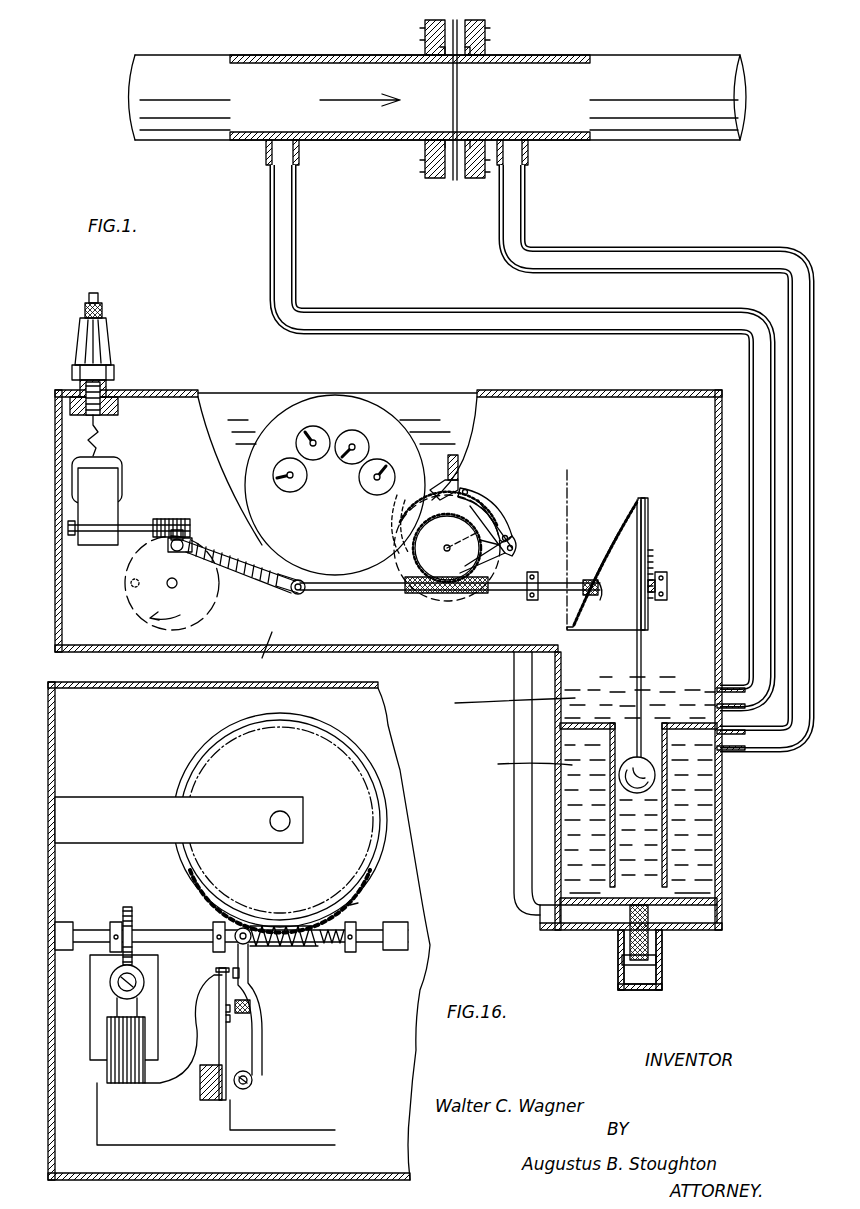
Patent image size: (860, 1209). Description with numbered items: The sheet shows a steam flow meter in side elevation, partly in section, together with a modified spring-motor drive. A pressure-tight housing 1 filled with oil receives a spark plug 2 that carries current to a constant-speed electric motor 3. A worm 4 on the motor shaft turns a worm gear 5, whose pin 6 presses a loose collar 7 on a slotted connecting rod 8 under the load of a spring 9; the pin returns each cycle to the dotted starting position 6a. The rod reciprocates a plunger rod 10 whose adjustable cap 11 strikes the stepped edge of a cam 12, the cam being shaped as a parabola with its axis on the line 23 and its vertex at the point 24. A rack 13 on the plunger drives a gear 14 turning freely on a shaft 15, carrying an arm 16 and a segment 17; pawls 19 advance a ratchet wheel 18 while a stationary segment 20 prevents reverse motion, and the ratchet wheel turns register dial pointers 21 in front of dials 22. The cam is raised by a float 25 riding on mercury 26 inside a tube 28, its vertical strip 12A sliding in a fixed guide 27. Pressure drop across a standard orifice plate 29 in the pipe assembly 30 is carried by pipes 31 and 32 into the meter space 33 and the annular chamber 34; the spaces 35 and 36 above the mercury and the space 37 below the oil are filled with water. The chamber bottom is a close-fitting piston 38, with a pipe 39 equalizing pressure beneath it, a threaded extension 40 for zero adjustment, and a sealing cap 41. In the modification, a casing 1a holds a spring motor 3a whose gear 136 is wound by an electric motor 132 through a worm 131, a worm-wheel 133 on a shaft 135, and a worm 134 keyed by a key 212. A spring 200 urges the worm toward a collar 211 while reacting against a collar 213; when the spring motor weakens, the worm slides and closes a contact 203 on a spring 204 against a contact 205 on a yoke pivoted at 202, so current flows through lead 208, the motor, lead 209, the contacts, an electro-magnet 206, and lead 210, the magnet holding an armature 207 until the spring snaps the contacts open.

In FIG. 1, the pressure-tight housing 1 is at (232, 398).
In FIG. 1, the spark plug 2 is at (108, 332).
In FIG. 1, the constant-speed electric motor 3 is at (100, 482).
In FIG. 1, the worm 4 is at (172, 520).
In FIG. 1, the worm gear 5 is at (125, 607).
In FIG. 1, the pin 6 is at (187, 534).
In FIG. 1, the starting position of pin 6a is at (130, 583).
In FIG. 1, the loose collar 7 is at (180, 552).
In FIG. 1, the connecting rod 8 is at (249, 572).
In FIG. 1, the spring 9 is at (240, 562).
In FIG. 1, the plunger rod 10 is at (340, 588).
In FIG. 1, the adjustable cap 11 is at (600, 590).
In FIG. 1, the cam 12 is at (627, 540).
In FIG. 1, the vertical strip of cam 12A is at (650, 556).
In FIG. 1, the rack 13 is at (432, 590).
In FIG. 1, the gear 14 is at (455, 573).
In FIG. 1, the shaft 15 is at (444, 548).
In FIG. 1, the arm 16 is at (508, 532).
In FIG. 1, the segment 17 is at (493, 518).
In FIG. 1, the ratchet wheel 18 is at (500, 558).
In FIG. 1, the pawls 19 is at (470, 492).
In FIG. 1, the stationary segment 20 is at (462, 478).
In FIG. 1, the register dial pointers 21 is at (276, 475).
In FIG. 1, the dials 22 is at (348, 430).
In FIG. 1, the axis line of cam parabola 23 is at (569, 503).
In FIG. 1, the vertex point of cam parabola 24 is at (575, 618).
In FIG. 1, the float 25 is at (652, 780).
In FIG. 1, the mercury 26 is at (650, 820).
In FIG. 1, the fixed guide 27 is at (662, 576).
In FIG. 1, the cylindrical chamber or tube 28 is at (667, 855).
In FIG. 1, the standard orifice plate 29 is at (455, 100).
In FIG. 1, the pipe assembly 30 is at (452, 82).
In FIG. 1, the pipe 31 is at (270, 210).
In FIG. 1, the pipe 32 is at (525, 200).
In FIG. 1, the meter space 33 is at (575, 677).
In FIG. 1, the annular chamber 34 is at (565, 810).
In FIG. 1, the chamber space 35 is at (572, 740).
In FIG. 1, the chamber space 36 is at (652, 738).
In FIG. 1, the space 37 is at (608, 700).
In FIG. 1, the piston 38 is at (683, 905).
In FIG. 1, the pipe 39 is at (514, 852).
In FIG. 1, the threaded extension 40 is at (625, 948).
In FIG. 1, the cap 41 is at (617, 975).
In FIG. 16, the casing 1a is at (82, 680).
In FIG. 16, the spring motor 3a is at (335, 730).
In FIG. 16, the worm 131 is at (108, 982).
In FIG. 16, the electric motor 132 is at (108, 1070).
In FIG. 16, the worm-wheel 133 is at (128, 907).
In FIG. 16, the worm 134 is at (306, 950).
In FIG. 16, the shaft 135 is at (130, 930).
In FIG. 16, the gear 136 is at (358, 903).
In FIG. 16, the spring 200 is at (340, 948).
In FIG. 16, the pivot 202 is at (252, 1080).
In FIG. 16, the contact 203 is at (222, 968).
In FIG. 16, the spring 204 is at (225, 1048).
In FIG. 16, the contact 205 is at (240, 975).
In FIG. 16, the electro-magnet 206 is at (252, 1008).
In FIG. 16, the armature 207 is at (222, 1010).
In FIG. 16, the lead 208 is at (318, 1143).
In FIG. 16, the lead 209 is at (200, 1002).
In FIG. 16, the lead 210 is at (292, 1120).
In FIG. 16, the collar 211 is at (213, 928).
In FIG. 16, the key 212 is at (238, 925).
In FIG. 16, the collar 213 is at (355, 936).